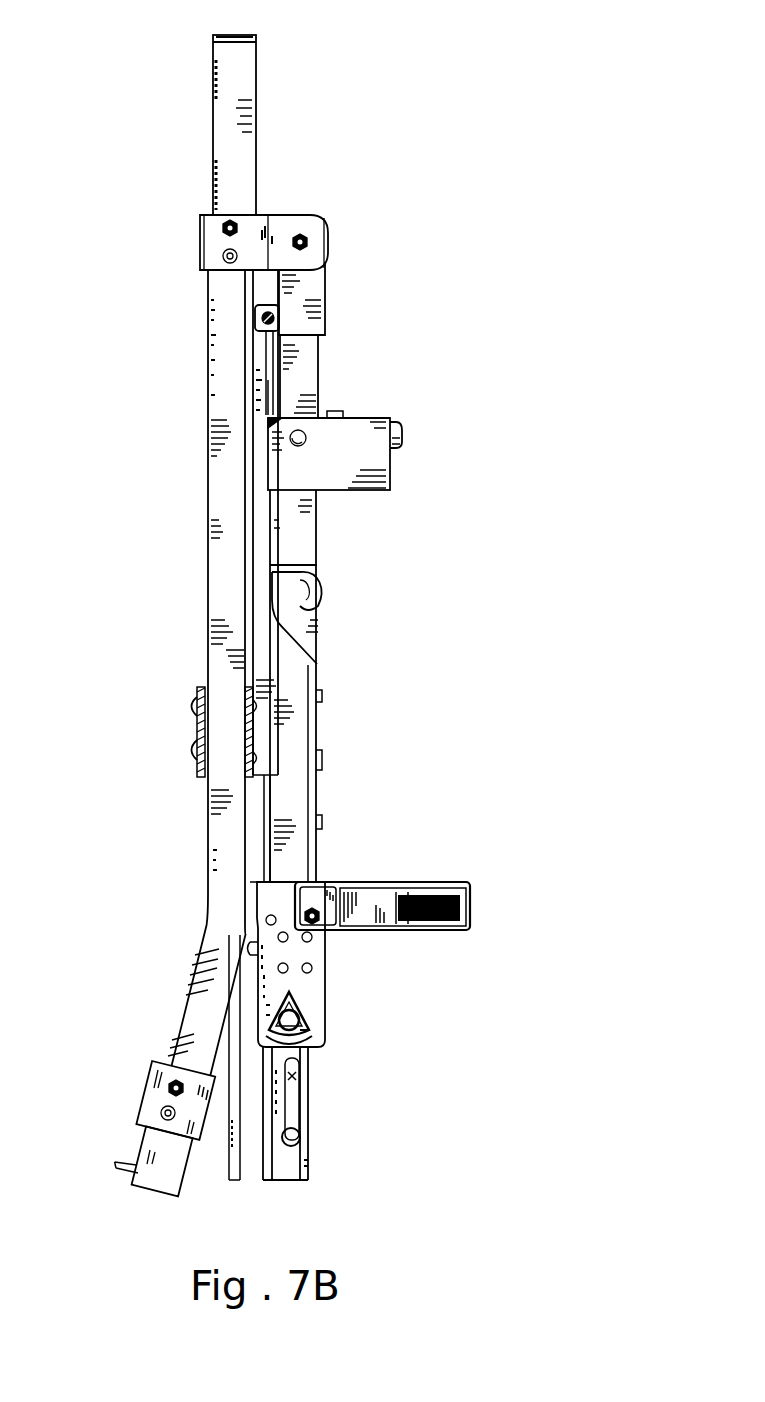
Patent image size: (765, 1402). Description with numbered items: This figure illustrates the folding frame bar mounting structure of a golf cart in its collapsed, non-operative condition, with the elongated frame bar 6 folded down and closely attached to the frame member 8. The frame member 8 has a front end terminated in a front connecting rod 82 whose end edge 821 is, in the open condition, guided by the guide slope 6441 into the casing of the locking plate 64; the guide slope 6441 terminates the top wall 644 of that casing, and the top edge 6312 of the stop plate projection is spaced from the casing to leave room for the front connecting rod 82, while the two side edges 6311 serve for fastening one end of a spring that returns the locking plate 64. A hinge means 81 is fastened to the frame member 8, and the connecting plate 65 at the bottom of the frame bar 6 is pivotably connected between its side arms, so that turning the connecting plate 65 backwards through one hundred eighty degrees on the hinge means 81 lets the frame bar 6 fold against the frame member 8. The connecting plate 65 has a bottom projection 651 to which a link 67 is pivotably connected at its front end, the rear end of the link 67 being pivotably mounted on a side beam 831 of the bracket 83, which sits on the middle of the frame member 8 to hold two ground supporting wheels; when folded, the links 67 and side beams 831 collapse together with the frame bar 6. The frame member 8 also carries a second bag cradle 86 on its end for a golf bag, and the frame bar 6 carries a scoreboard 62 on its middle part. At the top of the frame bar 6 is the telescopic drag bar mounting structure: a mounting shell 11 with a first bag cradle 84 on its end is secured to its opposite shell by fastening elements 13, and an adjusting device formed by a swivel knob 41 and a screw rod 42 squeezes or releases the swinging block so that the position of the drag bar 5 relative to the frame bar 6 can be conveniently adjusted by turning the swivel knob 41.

The drag bar 5 is at (308, 1108).
The frame bar 6 is at (319, 541).
The frame member 8 is at (207, 361).
The mounting shell 11 is at (325, 968).
The fastening elements 13 is at (289, 963).
The swivel knob 41 is at (320, 1031).
The screw rod 42 is at (297, 1008).
The scoreboard 62 is at (318, 698).
The locking plate 64 is at (378, 435).
The connecting plate 65 is at (326, 283).
The links 67 is at (268, 373).
The front connecting rod 82 is at (255, 90).
The hinge means 81 is at (276, 250).
The bracket 83 is at (197, 728).
The first bag cradle 84 is at (470, 919).
The second bag cradle 86 is at (158, 1057).
The top wall 644 is at (390, 456).
The bottom projection 651 is at (252, 312).
The end edge 821 is at (257, 38).
The side beams 831 is at (233, 1148).
The side edges 6311 is at (333, 411).
The top edge 6312 is at (345, 413).
The guide slope 6441 is at (400, 426).